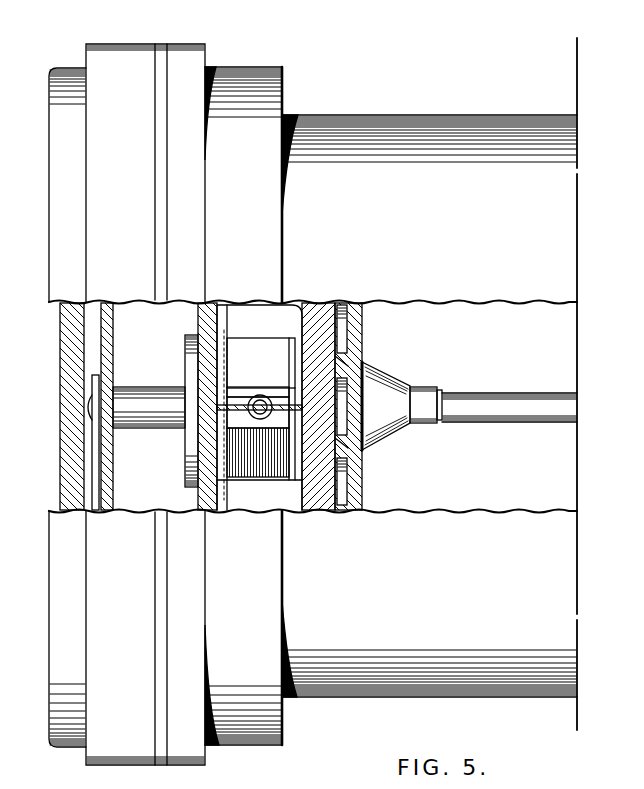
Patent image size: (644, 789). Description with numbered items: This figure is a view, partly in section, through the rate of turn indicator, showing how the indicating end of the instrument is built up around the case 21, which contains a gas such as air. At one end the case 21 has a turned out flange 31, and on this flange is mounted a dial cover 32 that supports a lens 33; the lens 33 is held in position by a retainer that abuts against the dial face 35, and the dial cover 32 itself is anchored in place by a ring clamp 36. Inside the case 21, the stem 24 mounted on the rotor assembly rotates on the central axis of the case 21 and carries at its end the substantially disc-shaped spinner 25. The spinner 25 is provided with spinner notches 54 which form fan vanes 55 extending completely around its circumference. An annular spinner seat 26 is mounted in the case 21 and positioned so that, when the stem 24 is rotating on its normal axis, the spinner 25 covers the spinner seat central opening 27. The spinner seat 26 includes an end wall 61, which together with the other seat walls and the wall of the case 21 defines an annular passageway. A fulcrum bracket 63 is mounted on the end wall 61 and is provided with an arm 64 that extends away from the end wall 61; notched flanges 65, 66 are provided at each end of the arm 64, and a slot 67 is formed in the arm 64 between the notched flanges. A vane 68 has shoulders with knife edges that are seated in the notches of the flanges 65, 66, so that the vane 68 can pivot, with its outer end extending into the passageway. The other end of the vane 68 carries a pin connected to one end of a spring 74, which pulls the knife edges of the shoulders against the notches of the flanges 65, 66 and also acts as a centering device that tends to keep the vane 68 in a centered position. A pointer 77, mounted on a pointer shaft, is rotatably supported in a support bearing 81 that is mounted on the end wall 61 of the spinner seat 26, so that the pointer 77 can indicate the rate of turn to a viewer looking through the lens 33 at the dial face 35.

The case 21 is at (424, 127).
The stem 24 is at (510, 400).
The spinner 25 is at (357, 340).
The spinner seat 26 is at (295, 298).
The spinner seat central opening 27 is at (254, 311).
The turned out flange 31 is at (159, 48).
The dial cover 32 is at (55, 132).
The lens 33 is at (62, 372).
The dial face 35 is at (111, 343).
The ring clamp 36 is at (194, 78).
The spinner notches 54 is at (347, 477).
The fan vanes 55 is at (351, 368).
The end wall 61 is at (200, 313).
The fulcrum bracket 63 is at (217, 490).
The arm 64 is at (268, 343).
The notched flange 65 is at (229, 393).
The notched flange 66 is at (292, 352).
The slot 67 is at (253, 388).
The vane 68 is at (232, 427).
The spring 74 is at (267, 425).
The pointer 77 is at (95, 481).
The support bearing 81 is at (148, 395).